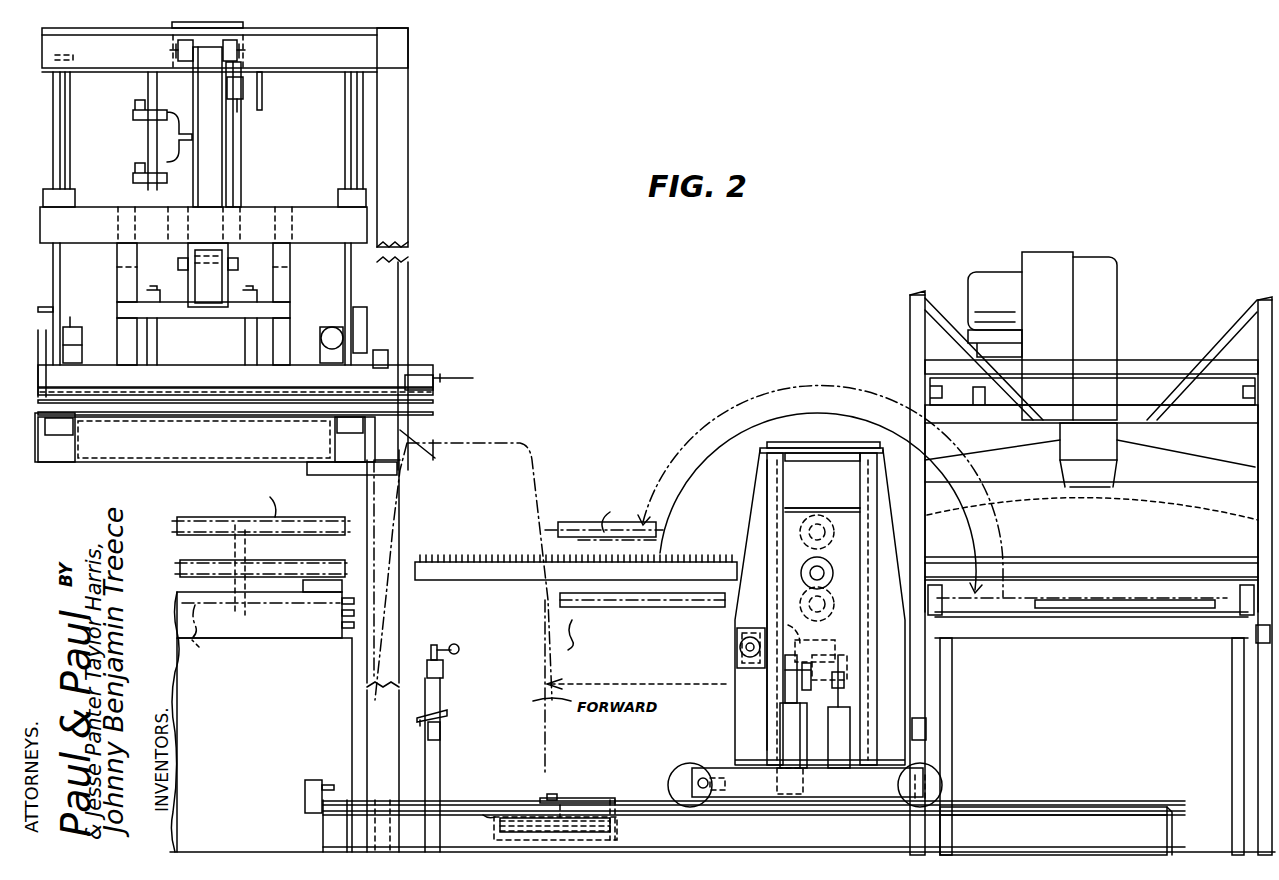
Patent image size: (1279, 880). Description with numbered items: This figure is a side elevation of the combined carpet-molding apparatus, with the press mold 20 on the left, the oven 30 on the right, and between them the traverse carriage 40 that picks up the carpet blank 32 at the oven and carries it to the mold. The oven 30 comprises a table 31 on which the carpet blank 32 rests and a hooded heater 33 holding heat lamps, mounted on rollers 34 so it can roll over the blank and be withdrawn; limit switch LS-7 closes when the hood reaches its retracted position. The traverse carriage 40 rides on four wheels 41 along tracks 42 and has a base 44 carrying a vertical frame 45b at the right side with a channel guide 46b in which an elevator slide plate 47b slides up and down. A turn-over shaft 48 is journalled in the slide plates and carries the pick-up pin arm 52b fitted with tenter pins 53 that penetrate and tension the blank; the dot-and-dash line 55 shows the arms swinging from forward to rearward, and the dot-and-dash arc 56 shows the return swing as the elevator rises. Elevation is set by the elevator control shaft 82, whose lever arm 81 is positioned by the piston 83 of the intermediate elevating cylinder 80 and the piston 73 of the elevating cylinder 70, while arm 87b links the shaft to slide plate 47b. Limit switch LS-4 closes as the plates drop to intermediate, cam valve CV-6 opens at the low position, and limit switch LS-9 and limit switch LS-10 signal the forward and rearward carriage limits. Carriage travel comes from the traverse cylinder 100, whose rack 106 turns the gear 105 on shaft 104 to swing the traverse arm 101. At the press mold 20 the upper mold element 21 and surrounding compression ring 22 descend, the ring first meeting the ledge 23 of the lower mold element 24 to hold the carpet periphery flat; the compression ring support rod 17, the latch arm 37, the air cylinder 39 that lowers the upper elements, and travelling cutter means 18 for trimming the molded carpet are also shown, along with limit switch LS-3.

The press mold 20 is at (422, 249).
The compression ring support rod 17 is at (60, 136).
The latch arm 37 is at (202, 176).
The air cylinder 39 is at (232, 147).
The limit switch LS-3 is at (237, 77).
The travelling cutter means 18 is at (81, 340).
The upper mold element 21 is at (185, 372).
The compression ring 22 is at (124, 457).
The lower mold element 24 is at (303, 641).
The carpet blank 32 is at (176, 567).
The ledge 23 is at (324, 580).
The pick-up pin arm 52b is at (280, 610).
The tenter pins 53 is at (523, 560).
The limit switch LS-4 is at (444, 670).
The cam valve CV-6 is at (438, 733).
The limit switch LS-9 is at (303, 788).
The base 44 is at (749, 800).
The traverse cylinder 100 is at (617, 828).
The gear 105 is at (488, 804).
The shaft 104 is at (554, 794).
The traverse arm 101 is at (612, 799).
The rack 106 is at (603, 802).
The traverse carriage 40 is at (830, 370).
The channel guide 46b is at (858, 462).
The elevator slide plate 47b is at (849, 511).
The vertical frame 45b is at (760, 497).
The turn-over shaft 48 is at (812, 572).
The arm 87b is at (738, 626).
The elevator control shaft 82 is at (740, 646).
The lever arm 81 is at (836, 652).
The piston 73 is at (785, 688).
The piston 83 is at (846, 680).
The elevating cylinder 70 is at (780, 720).
The intermediate elevating cylinder 80 is at (828, 745).
The wheels 41 is at (686, 778).
The dot-and-dash line 55 is at (797, 422).
The dot-and-dash arc 56 is at (689, 446).
The oven 30 is at (1126, 238).
The hooded heater 33 is at (1168, 495).
The table 31 is at (1113, 617).
The rollers 34 is at (943, 605).
The limit switch LS-7 is at (1258, 672).
The limit switch LS-10 is at (925, 728).
The tracks 42 is at (1050, 820).